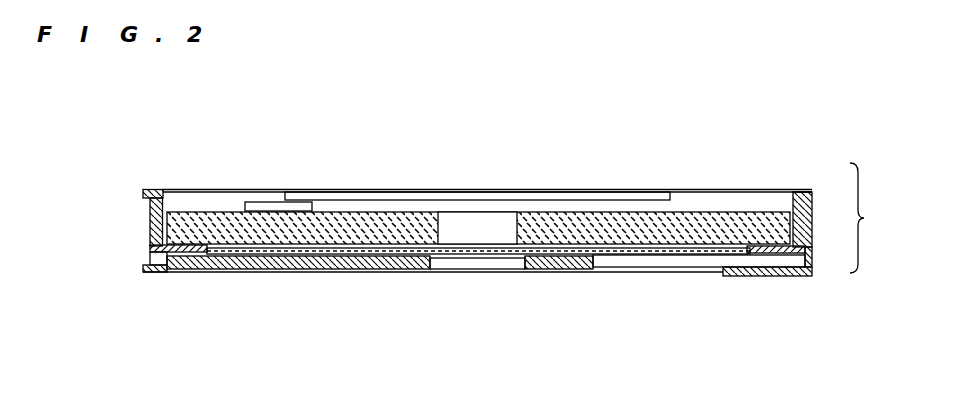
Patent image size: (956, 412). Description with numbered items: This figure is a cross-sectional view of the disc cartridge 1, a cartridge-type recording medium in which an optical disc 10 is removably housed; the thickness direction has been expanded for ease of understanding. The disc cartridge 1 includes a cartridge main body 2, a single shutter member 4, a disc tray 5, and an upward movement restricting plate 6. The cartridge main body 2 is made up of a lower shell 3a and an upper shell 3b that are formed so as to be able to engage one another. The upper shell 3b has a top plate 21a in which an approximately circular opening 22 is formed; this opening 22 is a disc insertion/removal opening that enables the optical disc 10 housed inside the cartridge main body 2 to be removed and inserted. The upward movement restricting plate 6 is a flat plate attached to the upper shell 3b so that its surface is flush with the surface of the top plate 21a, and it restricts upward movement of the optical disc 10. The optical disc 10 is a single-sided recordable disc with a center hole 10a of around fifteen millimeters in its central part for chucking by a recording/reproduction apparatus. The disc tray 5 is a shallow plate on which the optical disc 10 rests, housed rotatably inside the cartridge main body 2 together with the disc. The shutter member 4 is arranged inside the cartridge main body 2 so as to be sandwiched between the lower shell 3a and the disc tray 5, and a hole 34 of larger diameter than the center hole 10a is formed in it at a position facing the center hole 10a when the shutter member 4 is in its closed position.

The disc cartridge 1 is at (332, 158).
The cartridge main body 2 is at (865, 218).
The lower shell 3a is at (812, 267).
The upper shell 3b is at (812, 212).
The shutter member 4 is at (406, 262).
The disc tray 5 is at (662, 253).
The upward movement restricting plate 6 is at (597, 193).
The optical disc 10 is at (353, 226).
The center hole 10a is at (477, 218).
The top plate 21a is at (807, 191).
The opening 22 is at (192, 200).
The hole 34 is at (453, 268).